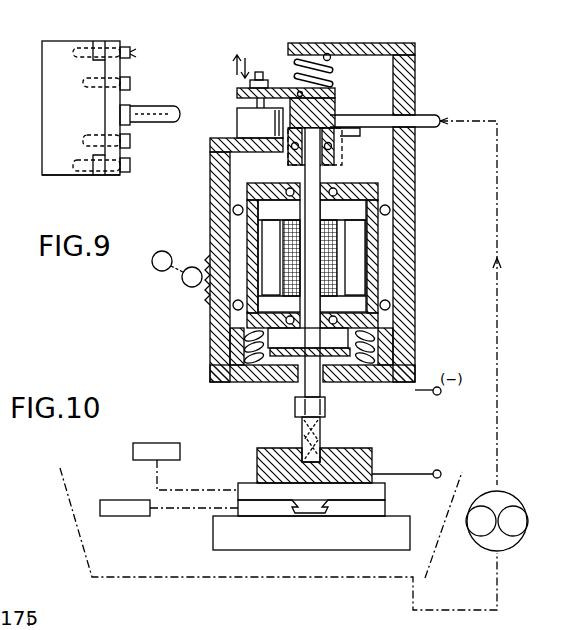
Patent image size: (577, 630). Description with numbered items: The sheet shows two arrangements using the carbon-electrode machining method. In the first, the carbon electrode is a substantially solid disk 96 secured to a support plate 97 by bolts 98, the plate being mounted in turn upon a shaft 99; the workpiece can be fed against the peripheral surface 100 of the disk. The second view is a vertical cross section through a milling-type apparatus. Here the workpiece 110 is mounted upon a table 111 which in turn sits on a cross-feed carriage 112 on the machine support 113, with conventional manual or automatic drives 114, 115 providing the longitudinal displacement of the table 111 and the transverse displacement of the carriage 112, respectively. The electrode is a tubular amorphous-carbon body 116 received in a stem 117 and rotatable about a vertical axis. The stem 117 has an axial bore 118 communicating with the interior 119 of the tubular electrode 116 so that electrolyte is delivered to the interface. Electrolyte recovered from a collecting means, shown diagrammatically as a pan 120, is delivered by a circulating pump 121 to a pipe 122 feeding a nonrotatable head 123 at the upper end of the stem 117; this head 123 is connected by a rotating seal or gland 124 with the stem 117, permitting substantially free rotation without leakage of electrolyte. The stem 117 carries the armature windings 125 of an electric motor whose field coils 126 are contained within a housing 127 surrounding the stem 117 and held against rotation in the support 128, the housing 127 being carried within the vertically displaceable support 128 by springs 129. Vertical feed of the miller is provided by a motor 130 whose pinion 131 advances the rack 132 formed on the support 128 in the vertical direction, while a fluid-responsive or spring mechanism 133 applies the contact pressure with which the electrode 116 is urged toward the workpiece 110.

In FIG. 9, the solid disk 96 is at (52, 47).
In FIG. 9, the support plate 97 is at (113, 45).
In FIG. 9, the bolts 98 is at (130, 82).
In FIG. 9, the shaft 99 is at (142, 114).
In FIG. 9, the peripheral surface 100 is at (62, 180).
In FIG. 10, the workpiece 110 is at (368, 452).
In FIG. 10, the table 111 is at (386, 492).
In FIG. 10, the cross-feed carriage 112 is at (275, 515).
In FIG. 10, the machine support 113 is at (300, 540).
In FIG. 10, the drive 114 is at (135, 450).
In FIG. 10, the drive 115 is at (140, 516).
In FIG. 10, the tubular amorphous-carbon body 116 is at (300, 433).
In FIG. 10, the stem 117 is at (306, 388).
In FIG. 10, the axial bore 118 is at (318, 248).
In FIG. 10, the interior of the tubular electrode 119 is at (322, 434).
In FIG. 10, the pan 120 is at (433, 564).
In FIG. 10, the circulating pump 121 is at (496, 492).
In FIG. 10, the pipe 122 is at (428, 119).
In FIG. 10, the nonrotatable head 123 is at (334, 104).
In FIG. 10, the rotating seal or gland 124 is at (335, 145).
In FIG. 10, the armature windings 125 is at (250, 326).
In FIG. 10, the field coils 126 is at (364, 283).
In FIG. 10, the housing 127 is at (258, 334).
In FIG. 10, the support 128 is at (412, 356).
In FIG. 10, the springs 129 is at (272, 352).
In FIG. 10, the motor 130 is at (158, 271).
In FIG. 10, the pinion 131 is at (196, 288).
In FIG. 10, the rack 132 is at (212, 250).
In FIG. 10, the fluid-responsive or spring mechanism 133 is at (241, 119).